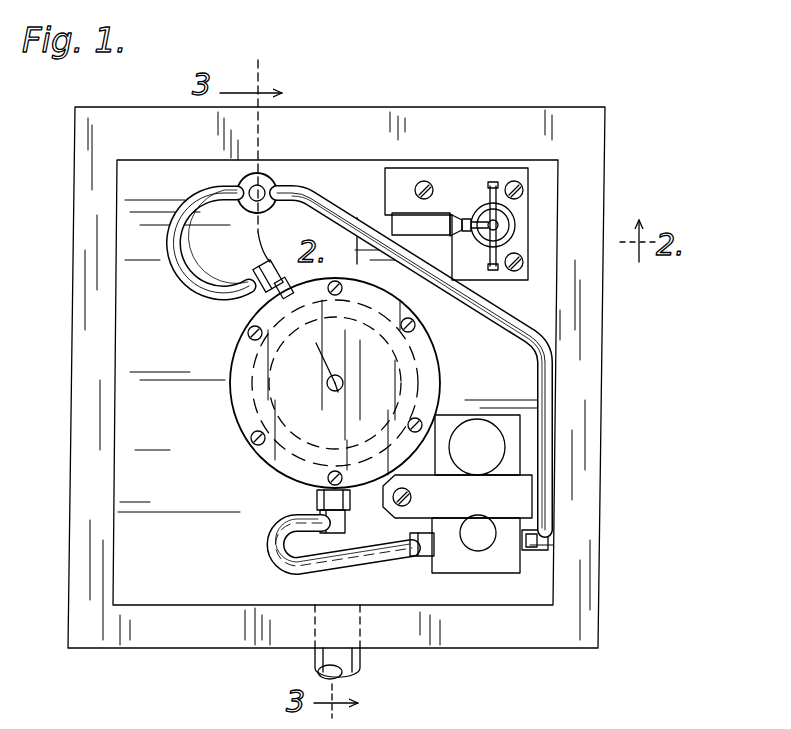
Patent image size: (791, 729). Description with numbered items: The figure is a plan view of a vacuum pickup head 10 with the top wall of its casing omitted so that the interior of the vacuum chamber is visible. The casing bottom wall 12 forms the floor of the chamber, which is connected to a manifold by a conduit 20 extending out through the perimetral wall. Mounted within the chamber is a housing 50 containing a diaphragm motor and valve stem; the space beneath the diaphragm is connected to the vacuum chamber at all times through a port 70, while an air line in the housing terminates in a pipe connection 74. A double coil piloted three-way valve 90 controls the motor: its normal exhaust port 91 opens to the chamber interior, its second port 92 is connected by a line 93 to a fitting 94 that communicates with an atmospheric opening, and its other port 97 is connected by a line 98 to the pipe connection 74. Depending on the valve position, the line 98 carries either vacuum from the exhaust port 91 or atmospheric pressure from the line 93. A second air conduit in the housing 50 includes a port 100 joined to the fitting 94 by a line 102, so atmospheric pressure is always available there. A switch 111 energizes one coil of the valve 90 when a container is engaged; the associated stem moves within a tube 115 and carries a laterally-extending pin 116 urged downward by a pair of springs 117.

The vacuum pickup head 10 is at (604, 336).
The bottom wall 12 is at (222, 475).
The conduit 20 is at (350, 662).
The housing 50 is at (226, 412).
The port 70 is at (317, 497).
The pipe connection 74 is at (333, 521).
The double coil piloted three-way valve 90 is at (449, 552).
The exhaust port 91 is at (478, 526).
The second port 92 is at (541, 551).
The line 93 is at (492, 315).
The fitting 94 is at (267, 186).
The other port 97 is at (426, 556).
The line 98 is at (334, 560).
The port 100 is at (254, 288).
The line 102 is at (178, 288).
The switch 111 is at (430, 222).
The tube 115 is at (508, 225).
The laterally-extending pin 116 is at (478, 231).
The springs 117 is at (499, 186).